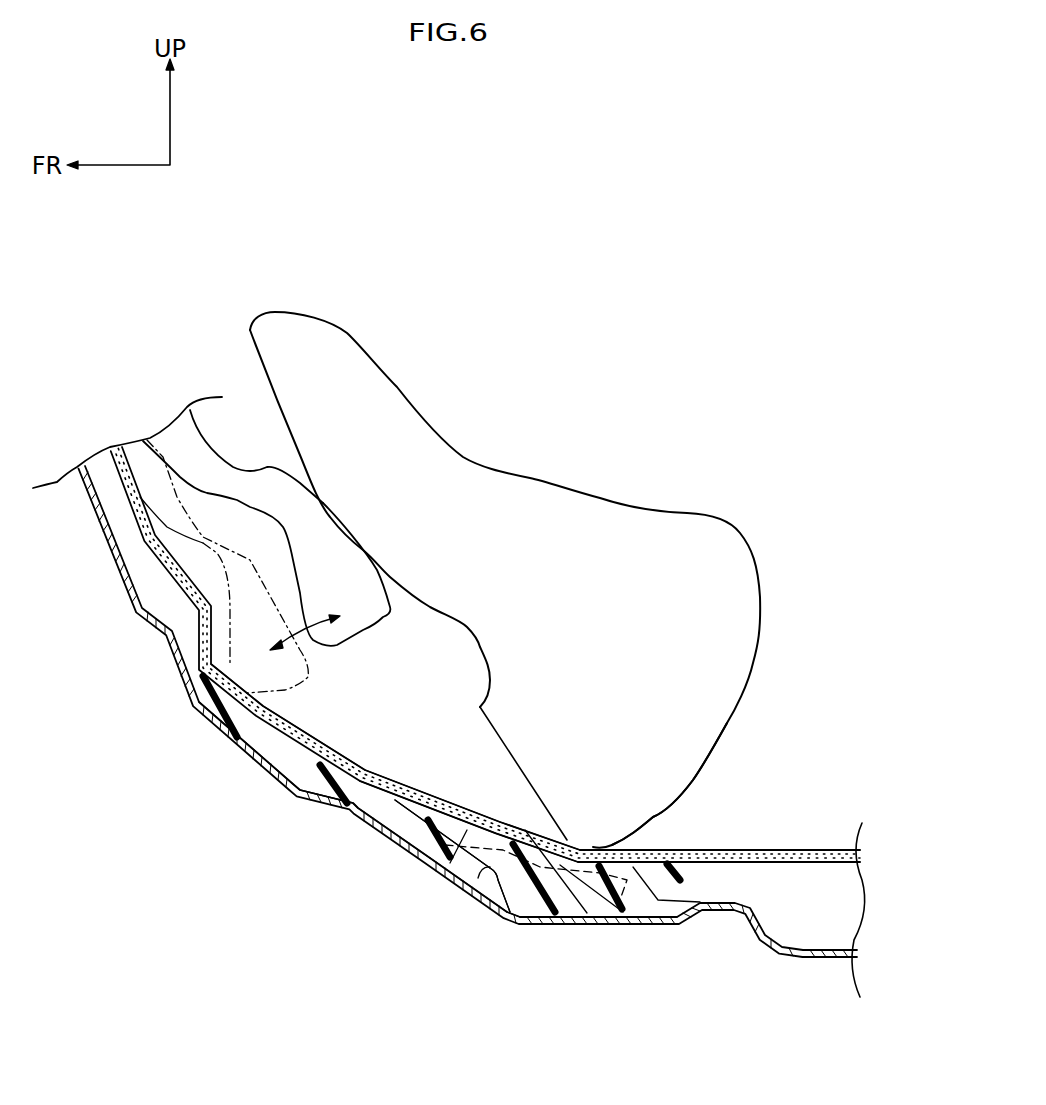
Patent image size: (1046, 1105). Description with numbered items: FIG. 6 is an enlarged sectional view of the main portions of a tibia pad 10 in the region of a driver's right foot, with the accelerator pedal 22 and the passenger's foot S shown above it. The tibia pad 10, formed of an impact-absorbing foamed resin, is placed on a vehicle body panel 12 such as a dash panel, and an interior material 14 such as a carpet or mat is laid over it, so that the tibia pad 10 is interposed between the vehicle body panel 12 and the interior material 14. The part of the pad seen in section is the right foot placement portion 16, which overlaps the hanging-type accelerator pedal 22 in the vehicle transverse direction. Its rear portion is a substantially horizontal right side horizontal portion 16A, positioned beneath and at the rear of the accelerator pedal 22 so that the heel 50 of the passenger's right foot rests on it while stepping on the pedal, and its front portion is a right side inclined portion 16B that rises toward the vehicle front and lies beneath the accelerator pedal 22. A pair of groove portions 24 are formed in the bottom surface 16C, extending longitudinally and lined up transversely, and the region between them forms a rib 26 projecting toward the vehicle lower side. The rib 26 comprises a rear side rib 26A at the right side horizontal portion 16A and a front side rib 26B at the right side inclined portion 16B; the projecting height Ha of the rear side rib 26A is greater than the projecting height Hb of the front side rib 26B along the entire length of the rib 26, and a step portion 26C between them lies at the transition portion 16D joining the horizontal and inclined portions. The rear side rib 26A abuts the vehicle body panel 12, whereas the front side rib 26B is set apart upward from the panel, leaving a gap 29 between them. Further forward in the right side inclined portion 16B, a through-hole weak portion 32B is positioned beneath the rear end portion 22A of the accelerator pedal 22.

The seat S is at (485, 273).
The tibia pad 10 is at (256, 761).
The vehicle body panel 12 is at (297, 790).
The interior material 14 is at (305, 735).
The right foot placement portion 16 is at (370, 790).
The right side horizontal portion 16A is at (670, 852).
The right side inclined portion 16B is at (453, 823).
The bottom surface 16C is at (533, 923).
The transition portion 16D is at (545, 845).
The accelerator pedal 22 is at (278, 469).
The rear end portion 22A is at (363, 633).
The groove portions 24 is at (507, 830).
The rib 26 is at (496, 915).
The rear side rib 26A is at (573, 921).
The front side rib 26B is at (443, 880).
The step portion 26C is at (470, 925).
The gap 29 is at (433, 857).
The weak portion 32B is at (385, 825).
The heel 50 is at (650, 835).
The projecting height of the rear side rib Ha is at (565, 833).
The projecting height of the front side rib Hb is at (477, 772).